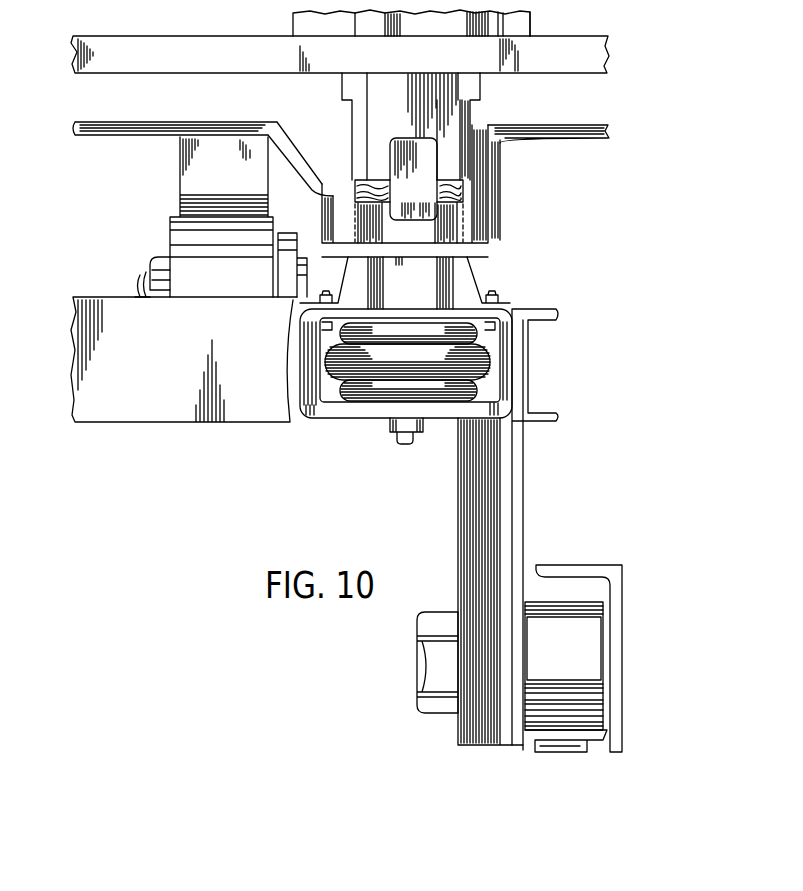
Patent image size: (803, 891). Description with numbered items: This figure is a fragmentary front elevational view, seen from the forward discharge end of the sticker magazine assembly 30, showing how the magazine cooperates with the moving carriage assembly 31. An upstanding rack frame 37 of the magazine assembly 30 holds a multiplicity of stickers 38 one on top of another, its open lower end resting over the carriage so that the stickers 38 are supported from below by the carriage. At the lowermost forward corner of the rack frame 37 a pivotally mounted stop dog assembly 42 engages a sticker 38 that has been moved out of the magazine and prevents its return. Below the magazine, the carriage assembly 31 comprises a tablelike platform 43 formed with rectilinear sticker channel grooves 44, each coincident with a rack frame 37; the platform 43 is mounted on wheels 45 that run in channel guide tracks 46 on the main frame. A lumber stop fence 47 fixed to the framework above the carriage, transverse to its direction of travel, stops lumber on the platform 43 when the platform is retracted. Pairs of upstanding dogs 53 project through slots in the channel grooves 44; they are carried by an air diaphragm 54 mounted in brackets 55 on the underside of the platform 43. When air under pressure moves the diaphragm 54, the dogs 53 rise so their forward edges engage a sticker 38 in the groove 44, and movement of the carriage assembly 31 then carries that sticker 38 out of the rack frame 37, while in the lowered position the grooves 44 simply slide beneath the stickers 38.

The sticker magazine assembly 30 is at (447, 34).
The moving carriage assembly 31 is at (419, 240).
The rack frame 37 is at (532, 17).
The sticker 38 is at (463, 189).
The stop dog assembly 42 is at (410, 180).
The tablelike platform 43 is at (160, 124).
The sticker channel groove 44 is at (488, 249).
The wheel 45 is at (578, 752).
The channel guide track 46 is at (626, 572).
The lumber stop fence 47 is at (272, 67).
The dog 53 is at (447, 272).
The air diaphragm 54 is at (386, 368).
The bracket 55 is at (389, 417).